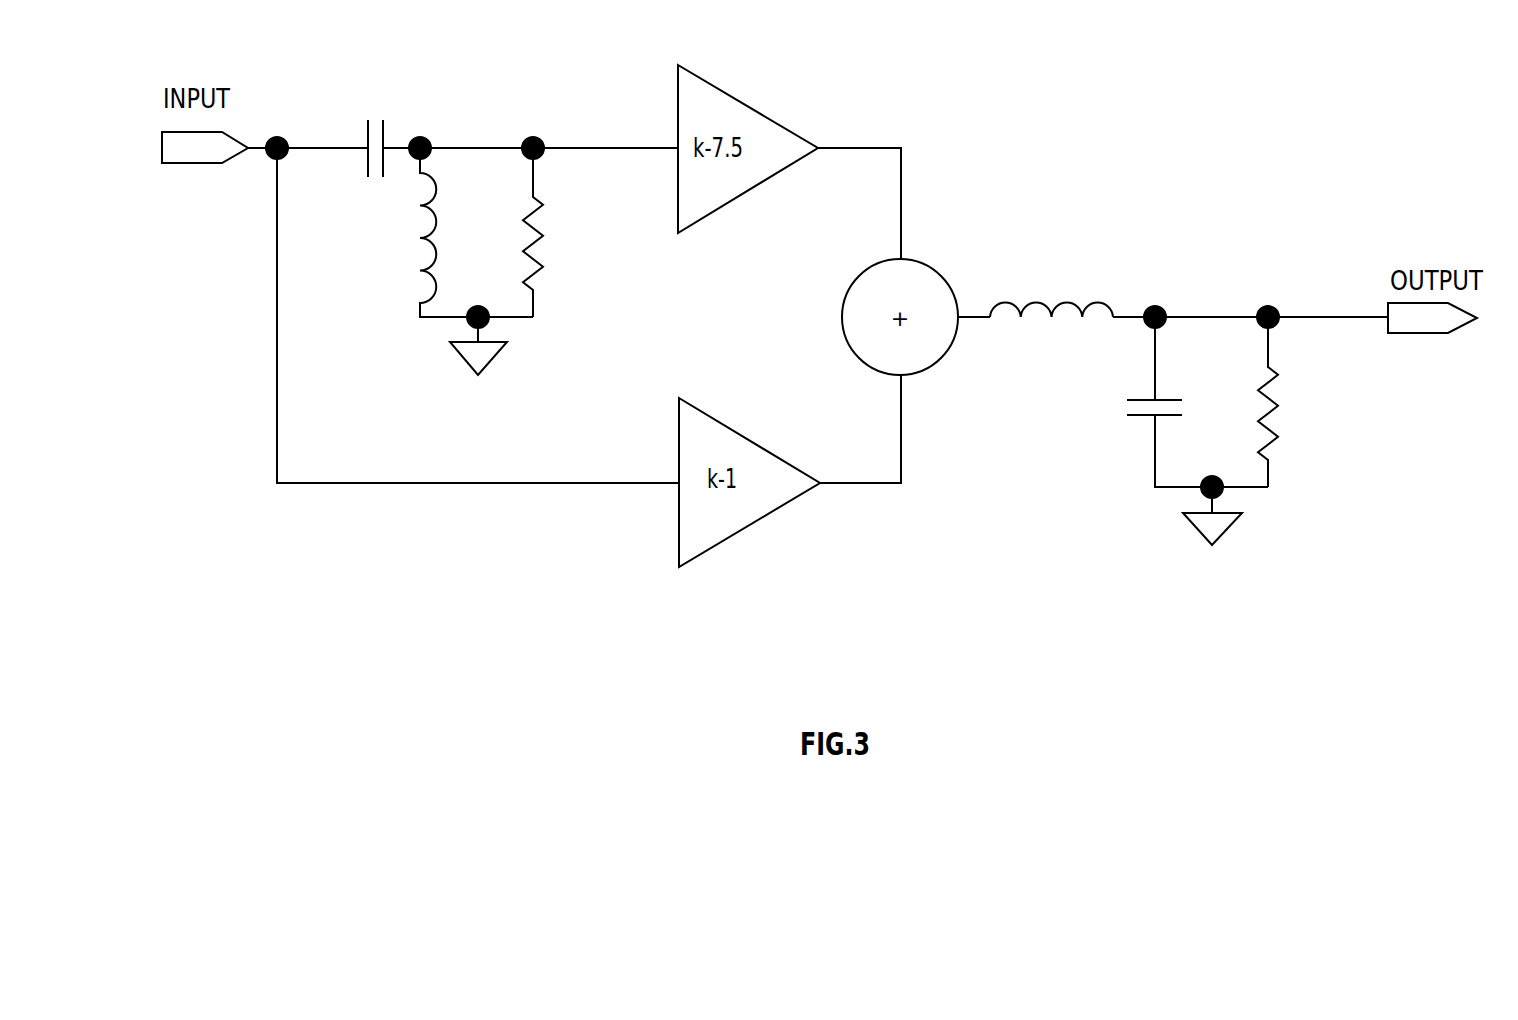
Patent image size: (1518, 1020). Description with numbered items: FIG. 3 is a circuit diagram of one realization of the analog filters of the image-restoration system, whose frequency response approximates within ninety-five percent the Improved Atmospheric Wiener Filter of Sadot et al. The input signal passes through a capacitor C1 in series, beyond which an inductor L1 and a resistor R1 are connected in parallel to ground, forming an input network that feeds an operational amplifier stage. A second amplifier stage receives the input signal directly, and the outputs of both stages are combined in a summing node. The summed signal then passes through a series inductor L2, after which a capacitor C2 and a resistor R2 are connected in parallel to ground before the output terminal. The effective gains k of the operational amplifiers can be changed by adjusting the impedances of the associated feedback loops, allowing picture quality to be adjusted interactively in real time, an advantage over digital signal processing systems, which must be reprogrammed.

The capacitor C1 50pF C1 is at (371, 115).
The inductor L1 91uH L1 is at (444, 232).
The resistor R1 2.4k R1 is at (560, 232).
The inductor L2 91uH L2 is at (1051, 276).
The capacitor C2 25pF C2 is at (1166, 402).
The resistor R2 3k R2 is at (1285, 402).